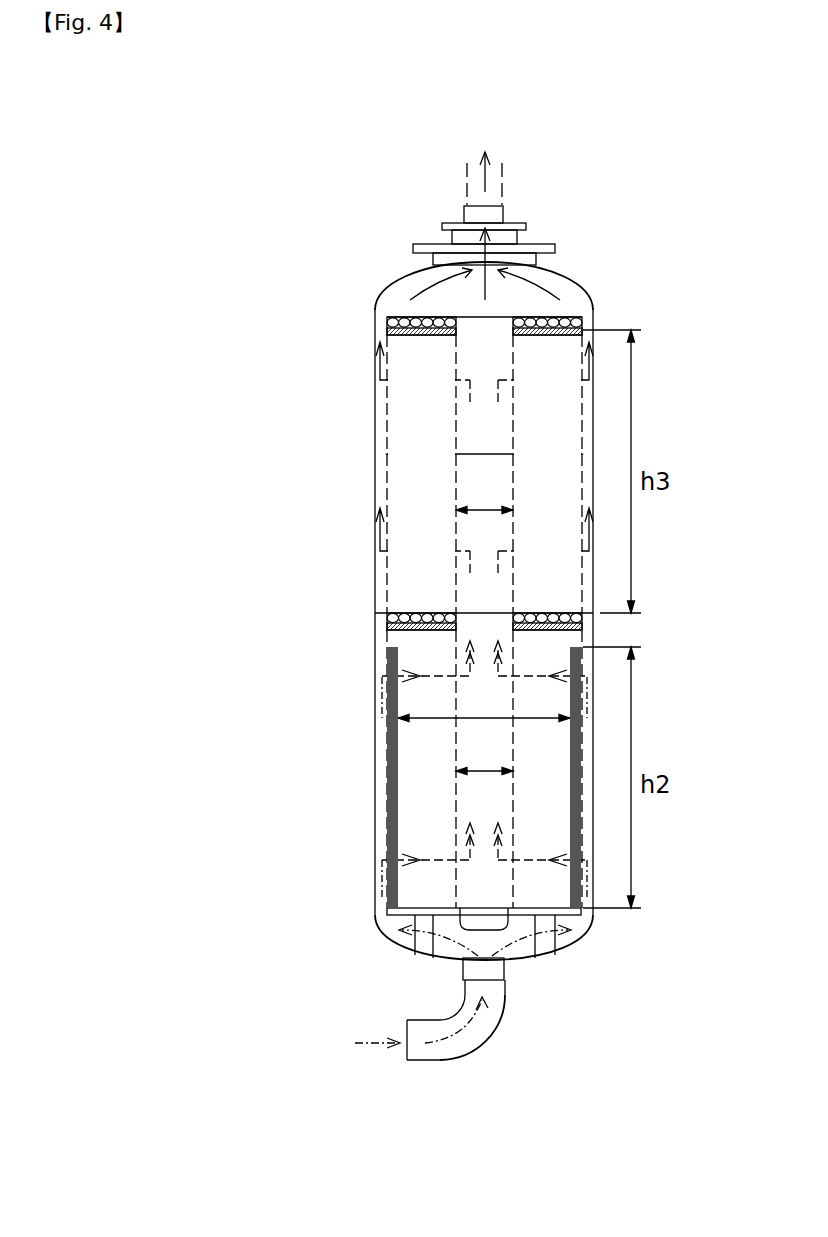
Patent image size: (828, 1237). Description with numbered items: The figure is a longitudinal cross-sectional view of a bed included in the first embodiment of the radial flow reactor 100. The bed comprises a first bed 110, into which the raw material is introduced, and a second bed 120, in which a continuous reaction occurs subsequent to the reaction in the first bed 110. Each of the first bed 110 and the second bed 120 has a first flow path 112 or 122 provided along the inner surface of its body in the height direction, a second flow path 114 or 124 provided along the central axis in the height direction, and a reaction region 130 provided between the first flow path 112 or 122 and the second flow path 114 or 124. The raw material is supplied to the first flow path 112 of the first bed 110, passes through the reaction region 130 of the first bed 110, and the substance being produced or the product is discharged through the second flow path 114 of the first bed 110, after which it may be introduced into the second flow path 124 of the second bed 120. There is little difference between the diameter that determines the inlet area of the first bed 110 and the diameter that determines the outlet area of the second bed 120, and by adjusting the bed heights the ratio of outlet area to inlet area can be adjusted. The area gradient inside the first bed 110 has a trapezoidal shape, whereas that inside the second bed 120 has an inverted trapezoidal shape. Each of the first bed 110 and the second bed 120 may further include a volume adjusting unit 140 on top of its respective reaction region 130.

The radial flow reactor 100 is at (279, 109).
The first bed 110 is at (375, 735).
The first flow path 112 is at (384, 818).
The second flow path 114 is at (476, 889).
The second bed 120 is at (375, 425).
The first flow path 122 is at (384, 408).
The second flow path 124 is at (494, 345).
The reaction region 130 is at (560, 592).
The volume adjusting unit 140 is at (380, 308).